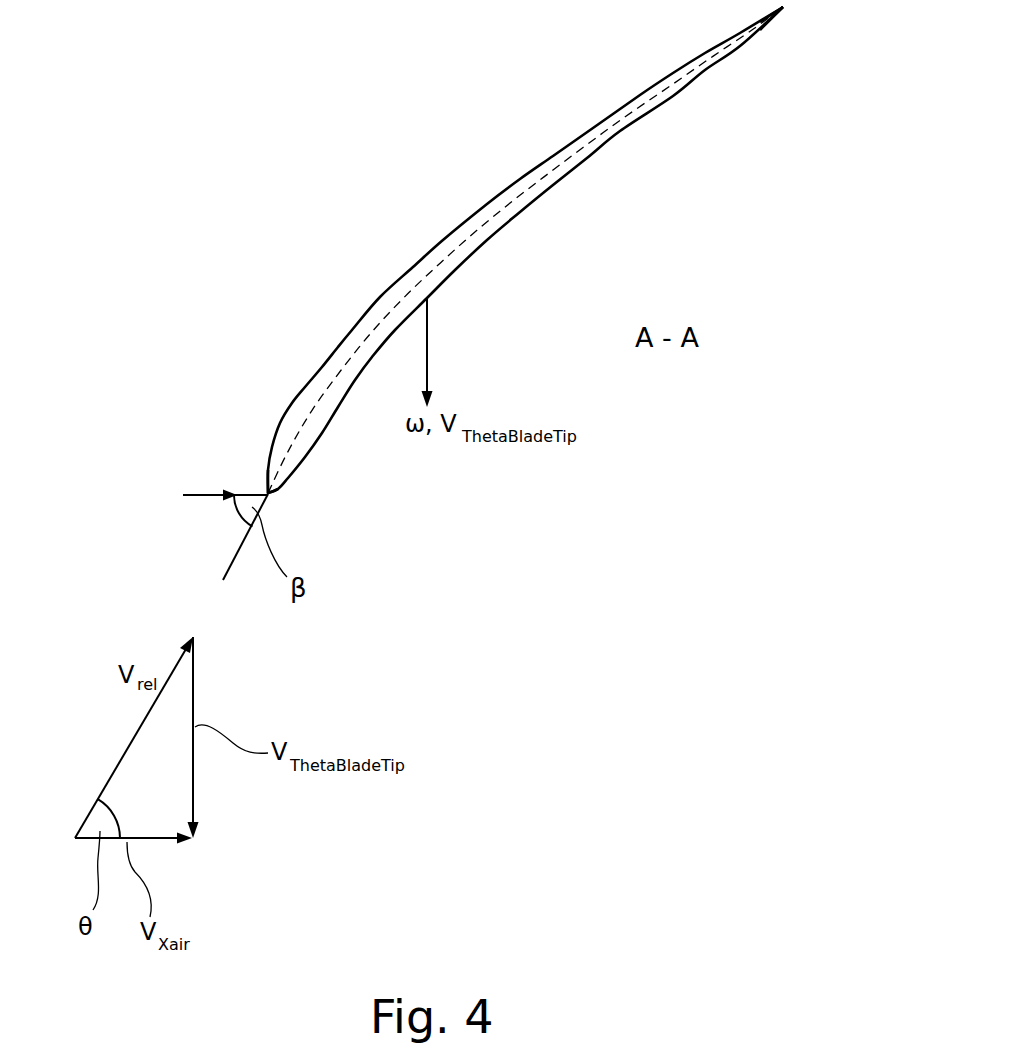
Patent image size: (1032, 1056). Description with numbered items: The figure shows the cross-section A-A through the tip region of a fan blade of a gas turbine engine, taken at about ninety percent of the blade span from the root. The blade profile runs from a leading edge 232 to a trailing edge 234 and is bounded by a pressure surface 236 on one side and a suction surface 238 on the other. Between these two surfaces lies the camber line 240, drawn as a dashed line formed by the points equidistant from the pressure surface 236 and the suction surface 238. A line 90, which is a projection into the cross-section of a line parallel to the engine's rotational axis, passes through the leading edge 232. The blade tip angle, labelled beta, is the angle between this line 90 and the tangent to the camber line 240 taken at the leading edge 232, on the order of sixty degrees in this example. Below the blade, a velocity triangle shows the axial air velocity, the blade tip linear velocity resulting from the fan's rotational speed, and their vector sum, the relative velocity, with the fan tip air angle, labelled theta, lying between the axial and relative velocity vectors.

The line 90 is at (225, 478).
The leading edge 232 is at (272, 497).
The trailing edge 234 is at (786, 8).
The pressure surface 236 is at (669, 96).
The suction surface 238 is at (667, 78).
The camber line 240 is at (572, 153).